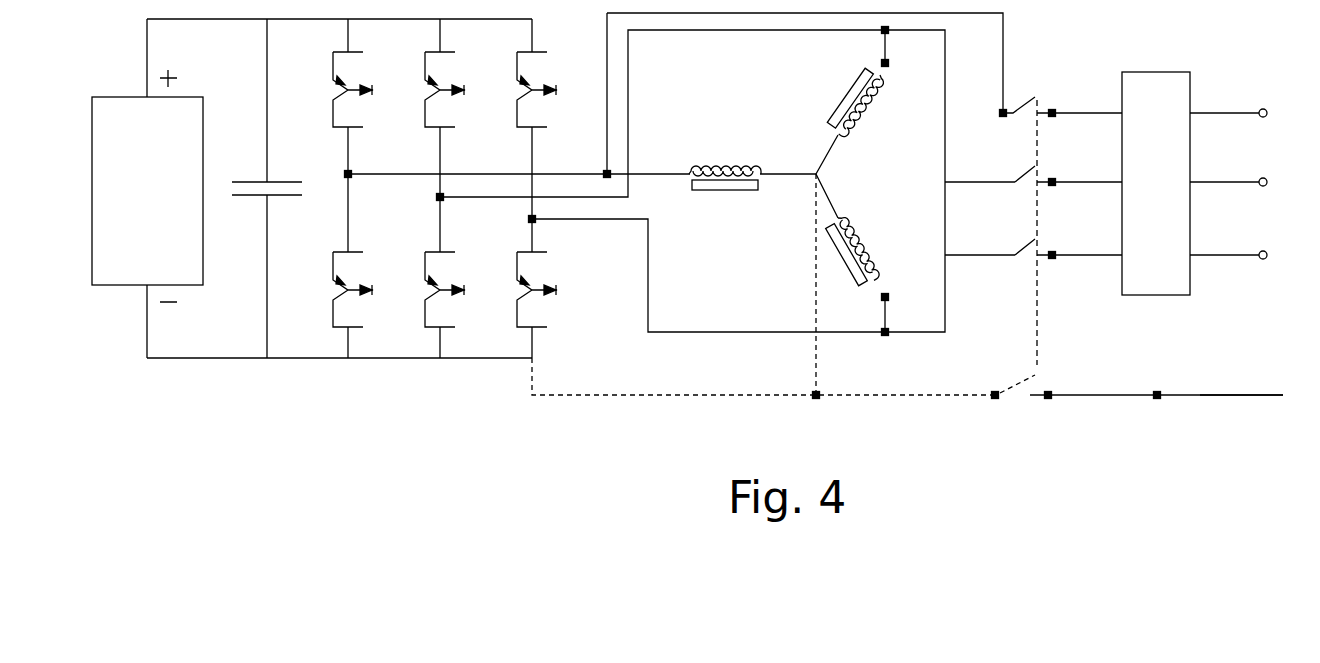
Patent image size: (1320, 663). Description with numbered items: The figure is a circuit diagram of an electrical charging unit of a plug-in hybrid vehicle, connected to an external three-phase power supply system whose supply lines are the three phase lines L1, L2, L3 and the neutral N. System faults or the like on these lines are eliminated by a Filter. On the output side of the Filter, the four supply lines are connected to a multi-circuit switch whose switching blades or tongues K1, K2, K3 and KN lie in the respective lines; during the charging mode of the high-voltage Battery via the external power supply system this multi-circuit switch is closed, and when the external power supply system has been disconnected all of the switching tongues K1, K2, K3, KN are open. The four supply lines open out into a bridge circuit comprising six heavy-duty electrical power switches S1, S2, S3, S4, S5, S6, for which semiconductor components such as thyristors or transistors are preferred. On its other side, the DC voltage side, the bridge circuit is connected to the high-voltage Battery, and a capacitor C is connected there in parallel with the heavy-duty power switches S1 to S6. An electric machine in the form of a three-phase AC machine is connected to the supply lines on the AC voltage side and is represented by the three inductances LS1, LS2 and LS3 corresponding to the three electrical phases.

The high-voltage battery Battery is at (147, 188).
The capacitor C is at (266, 188).
The heavy-duty electrical power switch S1 is at (330, 89).
The heavy-duty electrical power switch S2 is at (330, 289).
The heavy-duty electrical power switch S3 is at (422, 89).
The heavy-duty electrical power switch S4 is at (422, 289).
The heavy-duty electrical power switch S5 is at (516, 89).
The heavy-duty electrical power switch S6 is at (516, 289).
The inductance LS1 is at (725, 200).
The inductance LS2 is at (838, 102).
The inductance LS3 is at (868, 251).
The switching tongue K1 is at (1062, 95).
The switching tongue K2 is at (1068, 167).
The switching tongue K3 is at (1068, 241).
The switching tongue KN is at (1141, 380).
The filter Filter is at (1156, 183).
The supply line for phase L1 is at (1249, 113).
The supply line for phase L2 is at (1249, 182).
The supply line for phase L3 is at (1249, 255).
The supply line for neutral N is at (1256, 394).